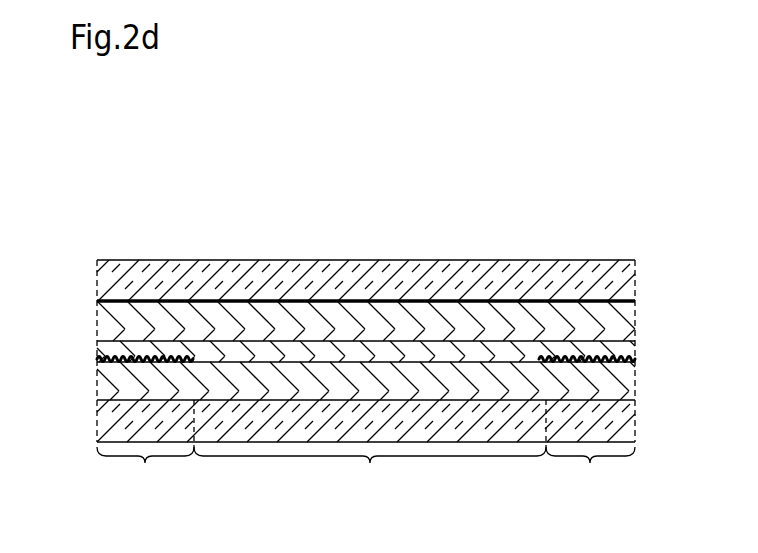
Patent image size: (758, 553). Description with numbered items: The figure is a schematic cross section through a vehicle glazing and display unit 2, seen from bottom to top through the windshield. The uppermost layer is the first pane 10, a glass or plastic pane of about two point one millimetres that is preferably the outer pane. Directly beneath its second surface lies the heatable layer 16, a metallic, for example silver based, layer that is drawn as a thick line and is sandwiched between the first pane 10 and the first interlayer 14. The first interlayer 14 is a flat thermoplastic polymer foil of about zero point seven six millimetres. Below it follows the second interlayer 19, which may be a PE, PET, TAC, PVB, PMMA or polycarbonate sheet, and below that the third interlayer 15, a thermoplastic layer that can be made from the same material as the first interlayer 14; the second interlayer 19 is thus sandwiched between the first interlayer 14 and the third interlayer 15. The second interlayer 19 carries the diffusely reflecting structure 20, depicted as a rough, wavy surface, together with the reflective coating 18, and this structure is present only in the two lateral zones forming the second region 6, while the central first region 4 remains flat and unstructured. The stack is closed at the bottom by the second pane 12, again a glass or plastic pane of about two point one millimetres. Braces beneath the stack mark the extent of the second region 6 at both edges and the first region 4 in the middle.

The vehicle glazing and display unit 2 is at (611, 197).
The first pane 10 is at (625, 282).
The heatable layer 16 is at (97, 301).
The first interlayer 14 is at (623, 322).
The second interlayer 19 is at (97, 350).
The diffusely reflecting structure 20 is at (424, 350).
The reflective coating 18 is at (632, 350).
The third interlayer 15 is at (624, 381).
The second pane 12 is at (624, 420).
The second region 6 is at (366, 449).
The first region 4 is at (370, 472).